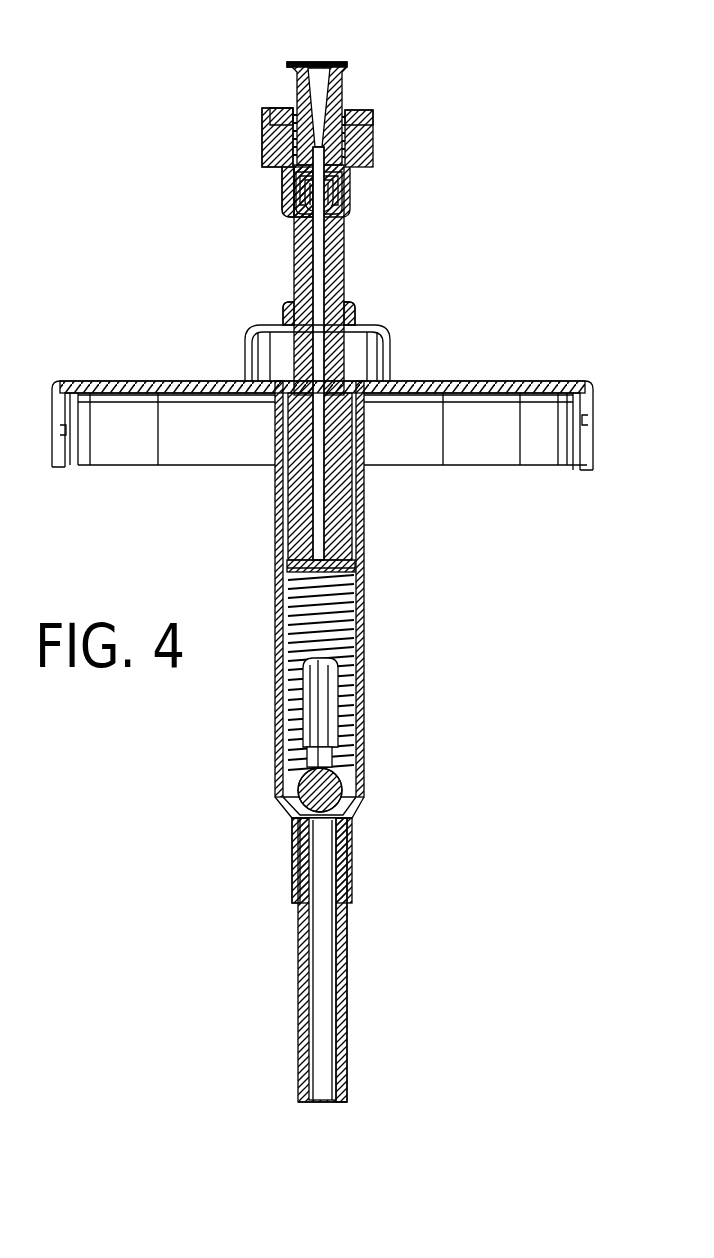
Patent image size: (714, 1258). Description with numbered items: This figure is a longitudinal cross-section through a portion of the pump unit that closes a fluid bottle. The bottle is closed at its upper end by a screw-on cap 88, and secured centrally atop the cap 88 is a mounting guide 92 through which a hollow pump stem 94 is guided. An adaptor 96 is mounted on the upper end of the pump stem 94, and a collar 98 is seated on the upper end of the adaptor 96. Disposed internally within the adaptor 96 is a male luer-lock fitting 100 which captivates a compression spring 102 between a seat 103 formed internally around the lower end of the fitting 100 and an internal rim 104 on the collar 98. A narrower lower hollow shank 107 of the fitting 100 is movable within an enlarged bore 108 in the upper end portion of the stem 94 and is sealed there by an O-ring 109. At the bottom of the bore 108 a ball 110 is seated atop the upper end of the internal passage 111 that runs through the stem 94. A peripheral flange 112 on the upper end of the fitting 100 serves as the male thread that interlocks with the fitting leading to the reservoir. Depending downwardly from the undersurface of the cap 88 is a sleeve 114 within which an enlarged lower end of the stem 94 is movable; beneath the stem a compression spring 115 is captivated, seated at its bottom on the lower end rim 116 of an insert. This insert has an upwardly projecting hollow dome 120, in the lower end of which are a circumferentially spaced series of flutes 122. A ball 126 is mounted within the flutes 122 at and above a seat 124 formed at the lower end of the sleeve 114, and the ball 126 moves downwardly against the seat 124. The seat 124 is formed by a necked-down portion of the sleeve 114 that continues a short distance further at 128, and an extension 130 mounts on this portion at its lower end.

The screw-on cap 88 is at (587, 387).
The mounting guide 92 is at (392, 346).
The hollow pump stem 94 is at (345, 292).
The adaptor 96 is at (345, 200).
The collar 98 is at (373, 147).
The male luer-lock fitting 100 is at (340, 100).
The compression spring 102 is at (277, 108).
The seat 103 is at (270, 130).
The internal rim 104 is at (353, 110).
The lower hollow shank 107 is at (347, 203).
The enlarged bore 108 is at (283, 197).
The O-ring 109 is at (355, 185).
The ball 110 is at (297, 218).
The internal passage 111 is at (287, 297).
The peripheral flange 112 is at (350, 63).
The sleeve 114 is at (365, 573).
The compression spring 115 is at (365, 622).
The lower end rim 116 is at (365, 800).
The hollow dome 120 is at (360, 714).
The flutes 122 is at (330, 758).
The seat 124 is at (293, 833).
The ball 126 is at (352, 828).
The necked-down portion 128 is at (352, 882).
The extension 130 is at (347, 998).